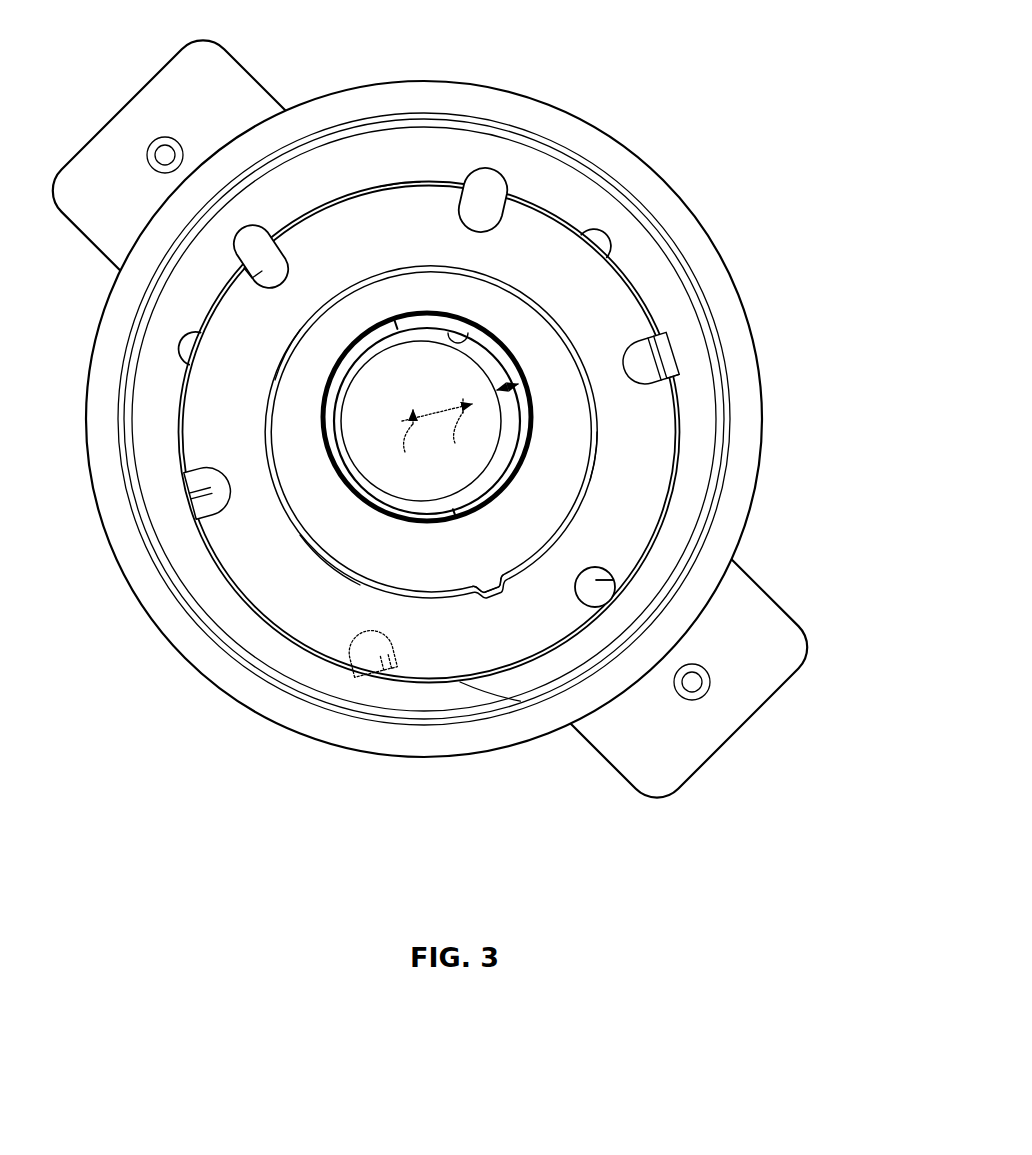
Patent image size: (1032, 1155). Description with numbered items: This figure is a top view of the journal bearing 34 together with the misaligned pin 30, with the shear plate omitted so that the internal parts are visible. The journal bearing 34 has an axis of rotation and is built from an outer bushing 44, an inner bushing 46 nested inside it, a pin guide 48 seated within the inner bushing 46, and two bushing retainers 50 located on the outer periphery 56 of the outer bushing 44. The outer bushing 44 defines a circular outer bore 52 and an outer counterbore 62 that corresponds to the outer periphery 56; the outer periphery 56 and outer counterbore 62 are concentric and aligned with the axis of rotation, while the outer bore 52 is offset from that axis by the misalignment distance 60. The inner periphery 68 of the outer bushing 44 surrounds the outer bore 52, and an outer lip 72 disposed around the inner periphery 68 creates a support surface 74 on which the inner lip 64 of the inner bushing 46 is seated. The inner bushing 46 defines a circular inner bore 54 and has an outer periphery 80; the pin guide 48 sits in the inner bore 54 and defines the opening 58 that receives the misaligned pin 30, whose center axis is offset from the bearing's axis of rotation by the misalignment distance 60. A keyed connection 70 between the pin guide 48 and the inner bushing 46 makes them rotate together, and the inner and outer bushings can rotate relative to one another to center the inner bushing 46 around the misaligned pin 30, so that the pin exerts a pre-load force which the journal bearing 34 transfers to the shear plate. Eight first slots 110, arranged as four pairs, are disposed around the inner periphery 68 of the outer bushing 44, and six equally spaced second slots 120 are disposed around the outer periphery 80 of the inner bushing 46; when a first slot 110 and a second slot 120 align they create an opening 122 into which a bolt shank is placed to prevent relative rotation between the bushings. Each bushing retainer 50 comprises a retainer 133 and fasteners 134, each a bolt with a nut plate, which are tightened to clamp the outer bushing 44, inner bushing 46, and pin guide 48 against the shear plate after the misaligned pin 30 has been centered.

The misaligned pin 30 is at (358, 388).
The journal bearing 34 is at (782, 232).
The outer bushing 44 is at (348, 737).
The inner bushing 46 is at (460, 665).
The pin guide 48 is at (455, 562).
The bushing retainer 50 is at (468, 407).
The outer bore 52 is at (556, 212).
The inner bore 54 is at (597, 474).
The outer periphery 56 is at (508, 86).
The opening 58 is at (458, 338).
The misalignment distance 60 is at (458, 406).
The outer counterbore 62 is at (532, 143).
The inner lip 64 is at (394, 186).
The inner periphery 68 is at (672, 362).
The keyed connection 70 is at (506, 592).
The outer lip 72 is at (670, 380).
The support surface 74 is at (724, 353).
The outer periphery 80 is at (358, 588).
The first slot 110 is at (480, 168).
The second slot 120 is at (282, 252).
The opening 122 is at (598, 580).
The retainer 133 is at (241, 82).
The fastener 134 is at (165, 148).